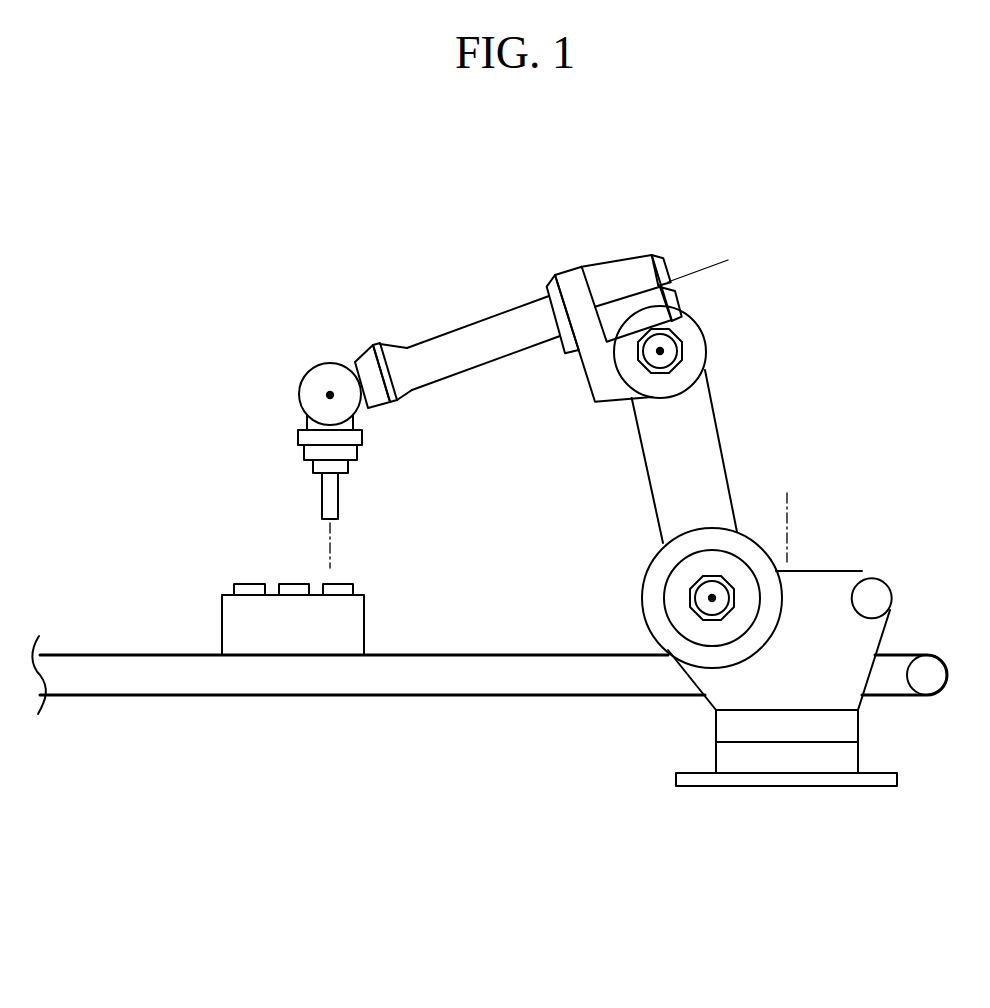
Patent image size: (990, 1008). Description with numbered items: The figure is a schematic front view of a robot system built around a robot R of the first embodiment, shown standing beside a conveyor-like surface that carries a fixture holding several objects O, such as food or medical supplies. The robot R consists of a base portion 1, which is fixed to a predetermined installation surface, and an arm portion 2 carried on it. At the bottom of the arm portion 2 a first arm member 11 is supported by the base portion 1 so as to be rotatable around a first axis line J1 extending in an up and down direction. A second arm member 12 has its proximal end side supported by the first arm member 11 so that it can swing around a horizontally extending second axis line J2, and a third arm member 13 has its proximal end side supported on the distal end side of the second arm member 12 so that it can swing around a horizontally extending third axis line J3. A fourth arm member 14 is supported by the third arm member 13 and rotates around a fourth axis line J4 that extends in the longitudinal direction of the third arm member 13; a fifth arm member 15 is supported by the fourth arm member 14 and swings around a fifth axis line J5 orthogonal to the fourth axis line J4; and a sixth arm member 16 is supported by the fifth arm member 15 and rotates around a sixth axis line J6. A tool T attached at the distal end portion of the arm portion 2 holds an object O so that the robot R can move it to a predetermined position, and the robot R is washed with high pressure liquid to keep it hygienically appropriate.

The base portion 1 is at (717, 752).
The arm portion 2 is at (723, 462).
The first arm member 11 is at (858, 572).
The second arm member 12 is at (647, 475).
The third arm member 13 is at (566, 274).
The fourth arm member 14 is at (363, 352).
The fifth arm member 15 is at (307, 422).
The sixth arm member 16 is at (357, 448).
The tool T is at (340, 492).
The object O is at (283, 583).
The robot R is at (765, 423).
The first axis line J1 is at (788, 505).
The second axis line J2 is at (712, 598).
The third axis line J3 is at (660, 351).
The fourth axis line J4 is at (702, 270).
The fifth axis line J5 is at (330, 395).
The sixth axis line J6 is at (332, 543).